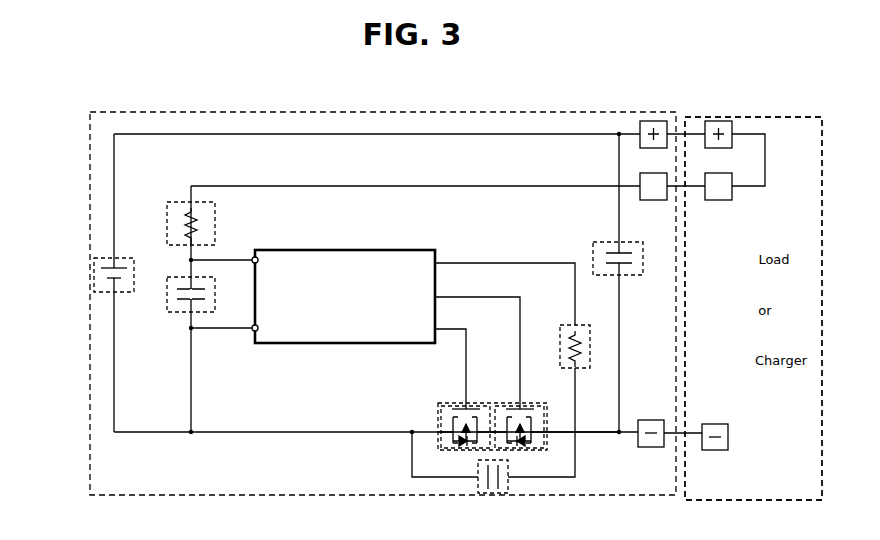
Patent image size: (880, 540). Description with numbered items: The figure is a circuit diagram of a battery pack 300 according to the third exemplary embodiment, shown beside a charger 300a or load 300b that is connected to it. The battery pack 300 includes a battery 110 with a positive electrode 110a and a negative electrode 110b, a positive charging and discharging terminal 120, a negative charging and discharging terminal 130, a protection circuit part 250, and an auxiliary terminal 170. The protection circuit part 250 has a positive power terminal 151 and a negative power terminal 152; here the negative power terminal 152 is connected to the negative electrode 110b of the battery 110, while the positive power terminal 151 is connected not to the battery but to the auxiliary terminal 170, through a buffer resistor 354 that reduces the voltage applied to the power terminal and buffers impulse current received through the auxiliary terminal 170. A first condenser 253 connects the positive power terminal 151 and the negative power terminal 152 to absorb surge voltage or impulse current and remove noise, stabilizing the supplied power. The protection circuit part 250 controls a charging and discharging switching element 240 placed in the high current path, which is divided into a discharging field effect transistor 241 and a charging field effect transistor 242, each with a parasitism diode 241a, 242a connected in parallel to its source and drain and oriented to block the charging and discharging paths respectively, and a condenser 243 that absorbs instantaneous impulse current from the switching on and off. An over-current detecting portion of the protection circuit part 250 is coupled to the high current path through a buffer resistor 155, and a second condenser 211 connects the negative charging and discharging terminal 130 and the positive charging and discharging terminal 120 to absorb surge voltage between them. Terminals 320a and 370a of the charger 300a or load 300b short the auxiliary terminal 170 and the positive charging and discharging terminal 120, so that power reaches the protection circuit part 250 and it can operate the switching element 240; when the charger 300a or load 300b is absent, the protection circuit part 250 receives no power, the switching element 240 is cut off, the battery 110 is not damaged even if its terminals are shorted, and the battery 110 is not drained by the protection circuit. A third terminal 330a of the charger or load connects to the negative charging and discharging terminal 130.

The battery pack 300 is at (381, 109).
The charger 300a is at (792, 116).
The load 300b is at (759, 289).
The battery 110 is at (82, 270).
The positive electrode 110a is at (113, 264).
The negative electrode 110b is at (113, 284).
The buffer resistor 354 is at (167, 222).
The first condenser 253 is at (167, 305).
The protection circuit part 250 is at (340, 249).
The positive power terminal 151 is at (252, 257).
The negative power terminal 152 is at (252, 332).
The second condenser 211 is at (593, 245).
The buffer resistor 155 is at (581, 325).
The positive charging and discharging terminal 120 is at (653, 120).
The auxiliary terminal 170 is at (651, 201).
The negative charging and discharging terminal 130 is at (650, 420).
The terminal of charger or load 320a is at (716, 121).
The terminal of charger or load 370a is at (715, 201).
The negative terminal of load or charger 330a is at (715, 424).
The charging and discharging switching element 240 is at (505, 424).
The discharging field effect transistor 241 is at (460, 424).
The charging field effect transistor 242 is at (522, 424).
The parasitism diode 241a is at (463, 446).
The parasitism diode 242a is at (515, 446).
The condenser 243 is at (493, 497).